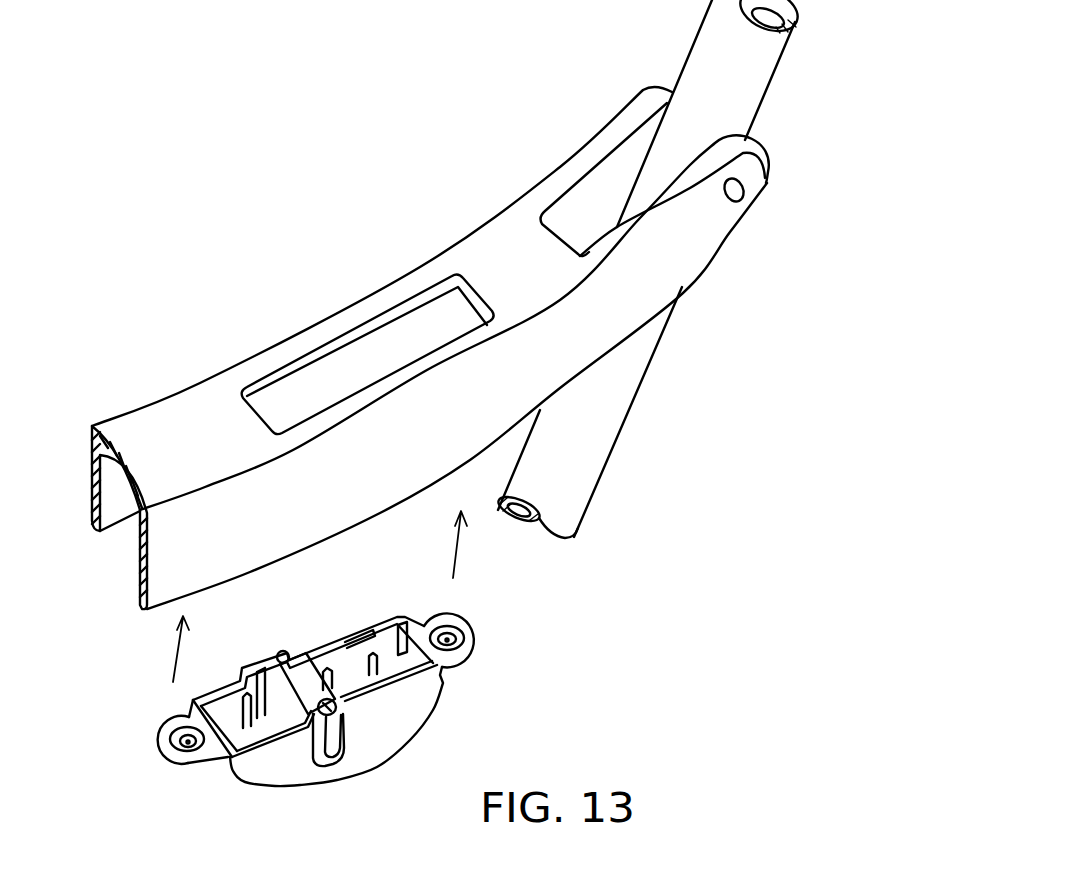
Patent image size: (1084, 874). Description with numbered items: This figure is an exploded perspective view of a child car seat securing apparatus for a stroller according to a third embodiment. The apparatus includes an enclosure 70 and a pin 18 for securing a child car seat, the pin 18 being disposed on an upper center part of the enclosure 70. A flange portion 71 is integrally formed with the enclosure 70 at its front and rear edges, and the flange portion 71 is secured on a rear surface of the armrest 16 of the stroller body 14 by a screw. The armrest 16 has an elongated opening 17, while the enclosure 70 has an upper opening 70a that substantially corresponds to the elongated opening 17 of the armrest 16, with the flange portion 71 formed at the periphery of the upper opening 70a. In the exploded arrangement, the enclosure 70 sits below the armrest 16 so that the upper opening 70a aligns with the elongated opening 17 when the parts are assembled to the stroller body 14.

The stroller body 14 is at (705, 317).
The armrest 16 is at (369, 312).
The elongated opening 17 is at (285, 375).
The pin 18 is at (297, 662).
The enclosure 70 is at (376, 732).
The upper opening 70a is at (367, 643).
The flange portion 71 is at (472, 637).